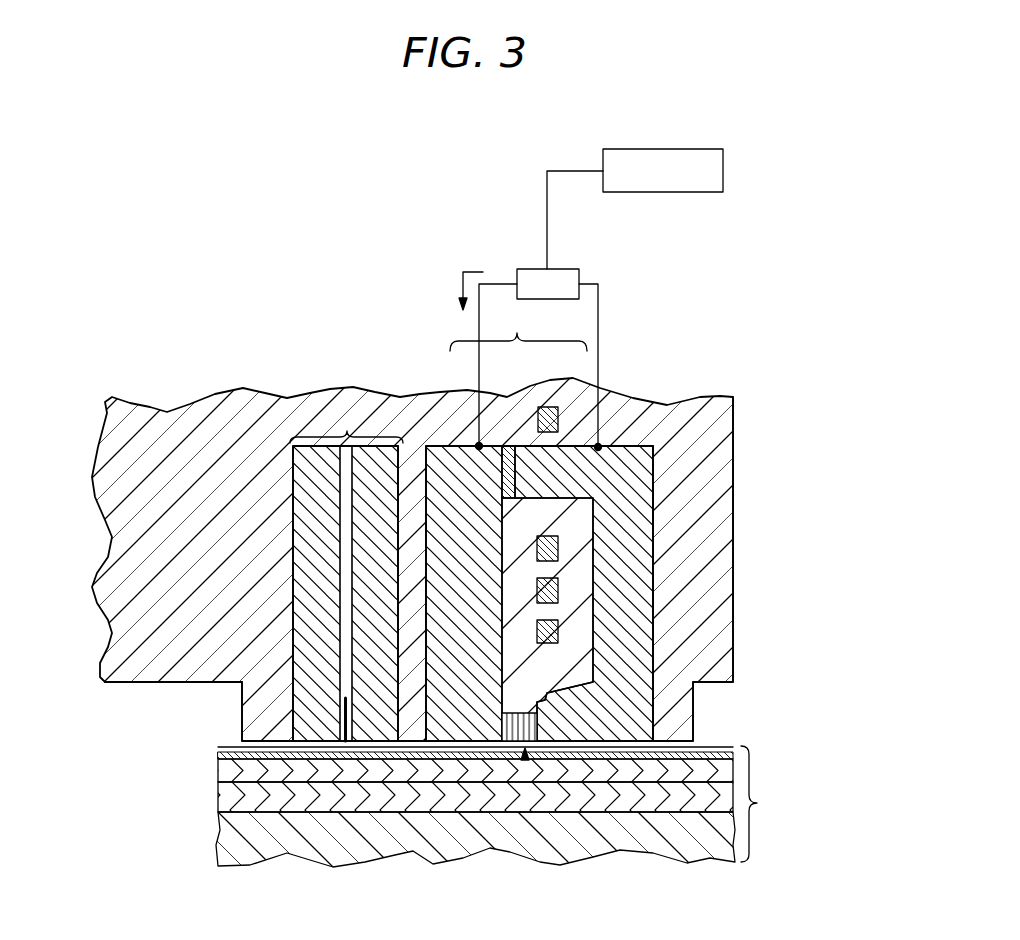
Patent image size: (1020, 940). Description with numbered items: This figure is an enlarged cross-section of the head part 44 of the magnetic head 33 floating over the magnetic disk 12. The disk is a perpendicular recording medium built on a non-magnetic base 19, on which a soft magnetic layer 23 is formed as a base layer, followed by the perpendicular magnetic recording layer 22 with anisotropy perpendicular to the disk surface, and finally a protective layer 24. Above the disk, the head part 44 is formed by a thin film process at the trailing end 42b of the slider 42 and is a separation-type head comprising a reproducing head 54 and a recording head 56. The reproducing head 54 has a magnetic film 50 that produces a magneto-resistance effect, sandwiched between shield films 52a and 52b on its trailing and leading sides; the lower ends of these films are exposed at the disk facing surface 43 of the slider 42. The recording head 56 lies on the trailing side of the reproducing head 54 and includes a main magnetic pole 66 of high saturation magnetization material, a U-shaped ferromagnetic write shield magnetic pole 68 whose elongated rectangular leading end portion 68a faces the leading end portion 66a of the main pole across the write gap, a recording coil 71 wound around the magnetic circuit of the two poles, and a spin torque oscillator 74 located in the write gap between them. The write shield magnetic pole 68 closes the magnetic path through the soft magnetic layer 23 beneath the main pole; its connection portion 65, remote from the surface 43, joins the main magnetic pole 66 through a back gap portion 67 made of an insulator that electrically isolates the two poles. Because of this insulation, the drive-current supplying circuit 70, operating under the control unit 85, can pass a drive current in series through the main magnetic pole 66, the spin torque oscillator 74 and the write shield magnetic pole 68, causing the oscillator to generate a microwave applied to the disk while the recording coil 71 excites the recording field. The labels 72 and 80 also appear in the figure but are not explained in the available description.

The magnetic disk 12 is at (474, 801).
The base 19 is at (222, 840).
The perpendicular magnetic recording layer 22 is at (222, 770).
The soft magnetic layer 23 is at (222, 795).
The protective layer 24 is at (218, 752).
The magnetic head 33 is at (241, 365).
The slider 42 is at (128, 425).
The trailing end 42b is at (734, 412).
The disk facing surface 43 is at (142, 684).
The head part 44 is at (370, 350).
The magnetic film 50 is at (343, 712).
The shield film 52a is at (388, 485).
The shield film 52b is at (302, 490).
The reproducing head 54 is at (346, 547).
The recording head 56 is at (517, 333).
The connection portion 65 is at (577, 457).
The main magnetic pole 66 is at (452, 483).
The leading end portion 66a is at (443, 730).
The back gap portion 67 is at (497, 490).
The write shield magnetic pole 68 is at (633, 450).
The leading end portion 68a is at (598, 730).
The drive-current supplying circuit 70 is at (527, 268).
The recording coil 71 is at (560, 632).
The protective layer 72 is at (680, 412).
The spin torque oscillator 74 is at (515, 742).
The heated spot 80 is at (526, 762).
The control unit 85 is at (618, 193).